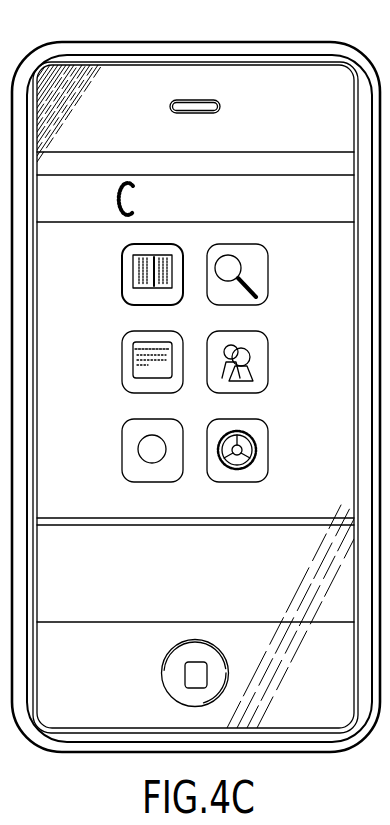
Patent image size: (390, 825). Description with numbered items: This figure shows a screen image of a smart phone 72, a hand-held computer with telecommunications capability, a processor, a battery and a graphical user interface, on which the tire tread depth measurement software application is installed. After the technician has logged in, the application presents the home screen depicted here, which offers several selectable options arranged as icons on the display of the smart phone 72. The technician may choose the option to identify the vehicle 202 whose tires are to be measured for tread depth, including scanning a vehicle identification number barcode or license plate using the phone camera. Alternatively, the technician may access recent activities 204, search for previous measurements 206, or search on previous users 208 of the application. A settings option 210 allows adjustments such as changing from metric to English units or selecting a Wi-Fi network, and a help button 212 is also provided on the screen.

The smart phone 72 is at (117, 42).
The vehicle identification option 202 is at (122, 285).
The recent activities option 204 is at (268, 283).
The previous measurements search option 206 is at (122, 372).
The previous users search option 208 is at (268, 343).
The settings option 210 is at (268, 445).
The help button 212 is at (122, 452).